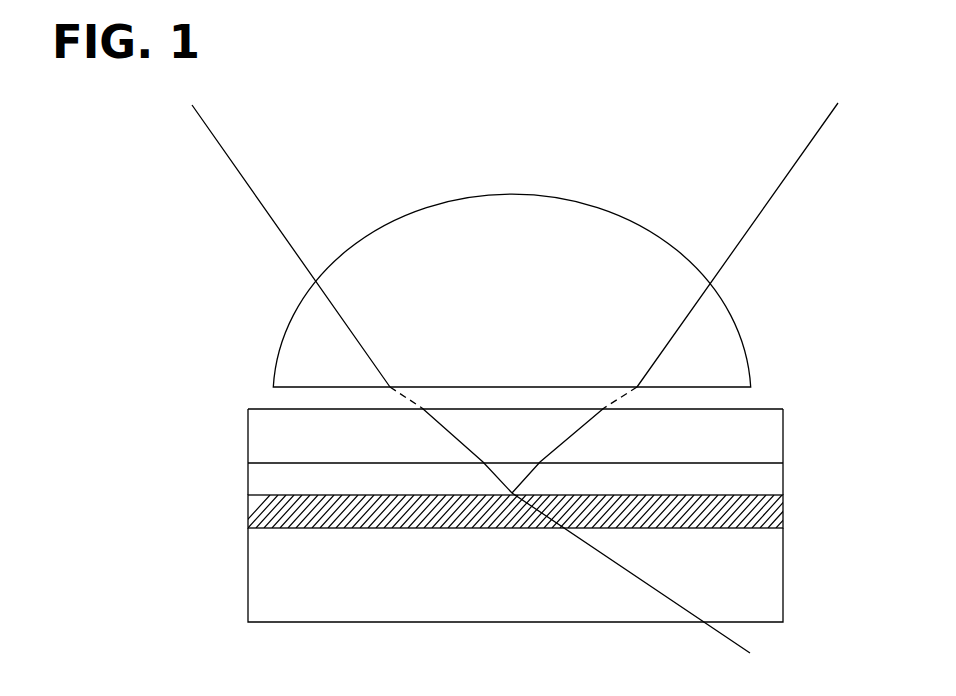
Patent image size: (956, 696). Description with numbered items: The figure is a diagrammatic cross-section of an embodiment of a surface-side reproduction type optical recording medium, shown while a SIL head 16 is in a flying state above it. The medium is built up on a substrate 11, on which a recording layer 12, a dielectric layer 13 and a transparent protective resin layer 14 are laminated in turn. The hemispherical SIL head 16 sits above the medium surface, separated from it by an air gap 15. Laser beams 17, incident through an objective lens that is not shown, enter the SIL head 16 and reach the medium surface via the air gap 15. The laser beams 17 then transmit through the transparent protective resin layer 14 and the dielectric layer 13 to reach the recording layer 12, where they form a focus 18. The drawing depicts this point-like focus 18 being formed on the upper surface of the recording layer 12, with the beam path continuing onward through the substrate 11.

The substrate 11 is at (783, 567).
The recording layer 12 is at (783, 512).
The dielectric layer 13 is at (783, 472).
The transparent protective resin layer 14 is at (783, 425).
The air gap 15 is at (718, 398).
The SIL head 16 is at (730, 310).
The laser beams 17 is at (765, 172).
The focus 18 is at (585, 530).